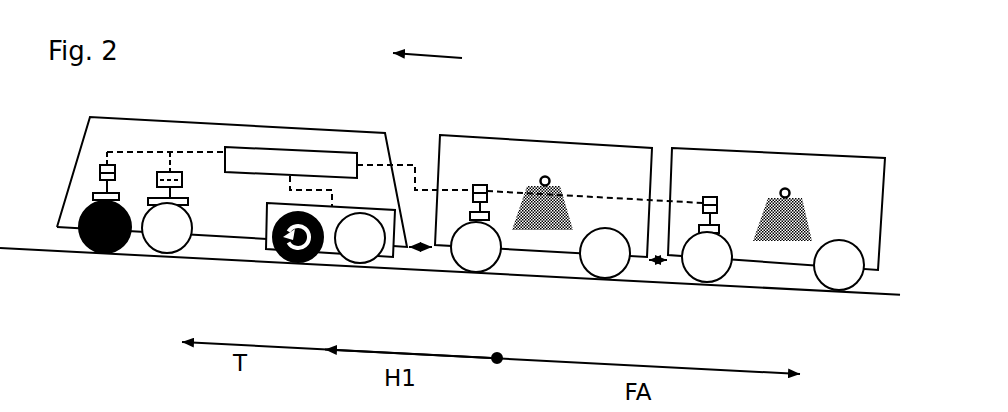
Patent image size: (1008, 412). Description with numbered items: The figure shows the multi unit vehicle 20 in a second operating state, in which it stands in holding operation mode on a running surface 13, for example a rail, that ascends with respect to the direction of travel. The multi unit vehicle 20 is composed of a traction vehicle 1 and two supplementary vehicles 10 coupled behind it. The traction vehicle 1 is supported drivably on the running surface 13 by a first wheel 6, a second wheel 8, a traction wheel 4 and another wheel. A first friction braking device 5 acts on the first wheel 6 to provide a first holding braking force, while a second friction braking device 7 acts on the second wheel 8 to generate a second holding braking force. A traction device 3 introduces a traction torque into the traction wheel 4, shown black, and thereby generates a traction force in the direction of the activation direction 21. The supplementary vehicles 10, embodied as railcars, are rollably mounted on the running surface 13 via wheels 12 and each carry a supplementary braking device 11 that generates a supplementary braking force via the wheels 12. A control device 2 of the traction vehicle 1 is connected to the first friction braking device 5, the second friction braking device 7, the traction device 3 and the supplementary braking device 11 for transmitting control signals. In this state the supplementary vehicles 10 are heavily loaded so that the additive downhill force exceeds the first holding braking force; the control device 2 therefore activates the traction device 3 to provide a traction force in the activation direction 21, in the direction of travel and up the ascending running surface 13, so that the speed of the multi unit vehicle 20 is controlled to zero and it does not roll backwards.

The traction vehicle 1 is at (230, 214).
The control device 2 is at (405, 176).
The traction device 3 is at (350, 275).
The traction wheel 4 is at (310, 262).
The first friction braking device 5 is at (128, 148).
The first wheel 6 is at (103, 255).
The second friction braking device 7 is at (185, 148).
The second wheel 8 is at (182, 255).
The supplementary vehicle 10 is at (604, 177).
The supplementary braking device 11 is at (488, 177).
The wheels 12 is at (493, 268).
The running surface 13 is at (783, 283).
The multi unit vehicle 20 is at (683, 93).
The activation direction 21 is at (433, 56).